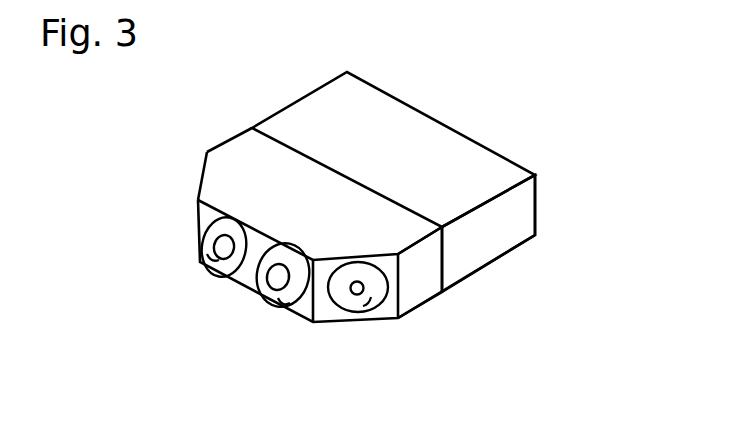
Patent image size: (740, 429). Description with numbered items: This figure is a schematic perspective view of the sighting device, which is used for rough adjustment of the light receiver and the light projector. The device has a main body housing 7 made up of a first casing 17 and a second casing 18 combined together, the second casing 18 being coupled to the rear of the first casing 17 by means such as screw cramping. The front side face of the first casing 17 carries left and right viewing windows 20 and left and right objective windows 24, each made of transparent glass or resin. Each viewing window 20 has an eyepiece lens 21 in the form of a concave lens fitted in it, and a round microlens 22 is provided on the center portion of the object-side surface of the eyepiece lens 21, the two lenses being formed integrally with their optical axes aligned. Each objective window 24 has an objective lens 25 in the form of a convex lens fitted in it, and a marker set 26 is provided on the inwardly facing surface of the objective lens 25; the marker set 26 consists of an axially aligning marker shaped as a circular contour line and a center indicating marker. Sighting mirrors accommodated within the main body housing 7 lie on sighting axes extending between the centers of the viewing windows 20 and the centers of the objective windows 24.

The main body housing 7 is at (525, 357).
The first casing 17 is at (430, 278).
The second casing 18 is at (500, 248).
The viewing window 20 is at (367, 302).
The eyepiece lens 21 is at (338, 295).
The microlens 22 is at (355, 295).
The objective window 24 is at (210, 257).
The objective lens 25 is at (210, 228).
The marker set 26 is at (230, 278).